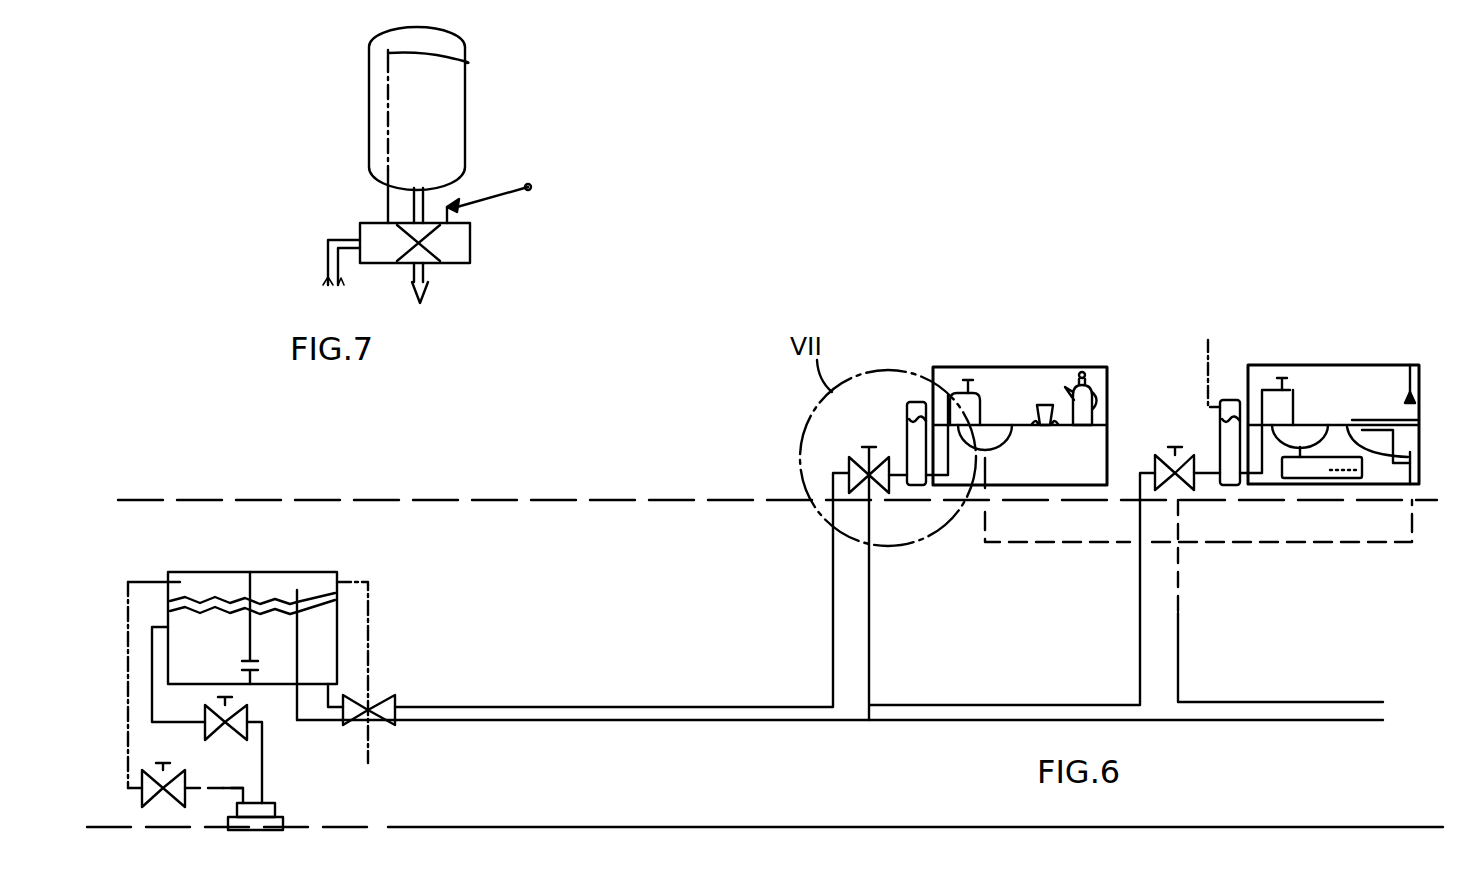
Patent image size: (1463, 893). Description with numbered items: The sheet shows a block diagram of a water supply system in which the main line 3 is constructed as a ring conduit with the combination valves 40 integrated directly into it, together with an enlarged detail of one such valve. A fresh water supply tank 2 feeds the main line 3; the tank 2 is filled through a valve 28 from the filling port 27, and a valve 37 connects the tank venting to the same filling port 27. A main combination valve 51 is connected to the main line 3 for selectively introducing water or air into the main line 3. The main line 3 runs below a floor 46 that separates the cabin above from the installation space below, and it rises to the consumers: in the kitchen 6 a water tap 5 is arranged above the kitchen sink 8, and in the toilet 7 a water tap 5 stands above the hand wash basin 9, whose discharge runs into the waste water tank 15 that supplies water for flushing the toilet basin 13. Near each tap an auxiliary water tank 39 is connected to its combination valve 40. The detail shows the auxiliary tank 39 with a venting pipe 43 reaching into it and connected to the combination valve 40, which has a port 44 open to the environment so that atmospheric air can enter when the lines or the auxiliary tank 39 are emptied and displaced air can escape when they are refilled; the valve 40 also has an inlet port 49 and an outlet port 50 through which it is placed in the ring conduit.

In FIG. 6, the fresh water supply tank 2 is at (325, 571).
In FIG. 6, the main line 3 is at (597, 705).
In FIG. 6, the water tap 5 is at (982, 398).
In FIG. 6, the kitchen 6 is at (1047, 366).
In FIG. 6, the toilet 7 is at (1371, 365).
In FIG. 6, the kitchen sink 8 is at (997, 437).
In FIG. 6, the hand wash basin 9 is at (1318, 432).
In FIG. 6, the toilet basin 13 is at (1412, 437).
In FIG. 6, the waste water tank 15 is at (1368, 478).
In FIG. 6, the filling port 27 is at (287, 825).
In FIG. 6, the valve 28 is at (247, 710).
In FIG. 6, the valve 37 is at (140, 795).
In FIG. 7, the auxiliary water tank 39 is at (455, 115).
In FIG. 6, the auxiliary water tank 39 is at (922, 400).
In FIG. 7, the combination valve 40 is at (470, 240).
In FIG. 6, the combination valve 40 is at (888, 462).
In FIG. 7, the venting pipe 43 is at (465, 57).
In FIG. 7, the port 44 is at (507, 190).
In FIG. 6, the floor 46 is at (566, 500).
In FIG. 7, the inlet port 49 is at (349, 240).
In FIG. 7, the outlet port 50 is at (426, 290).
In FIG. 6, the main combination valve 51 is at (387, 725).